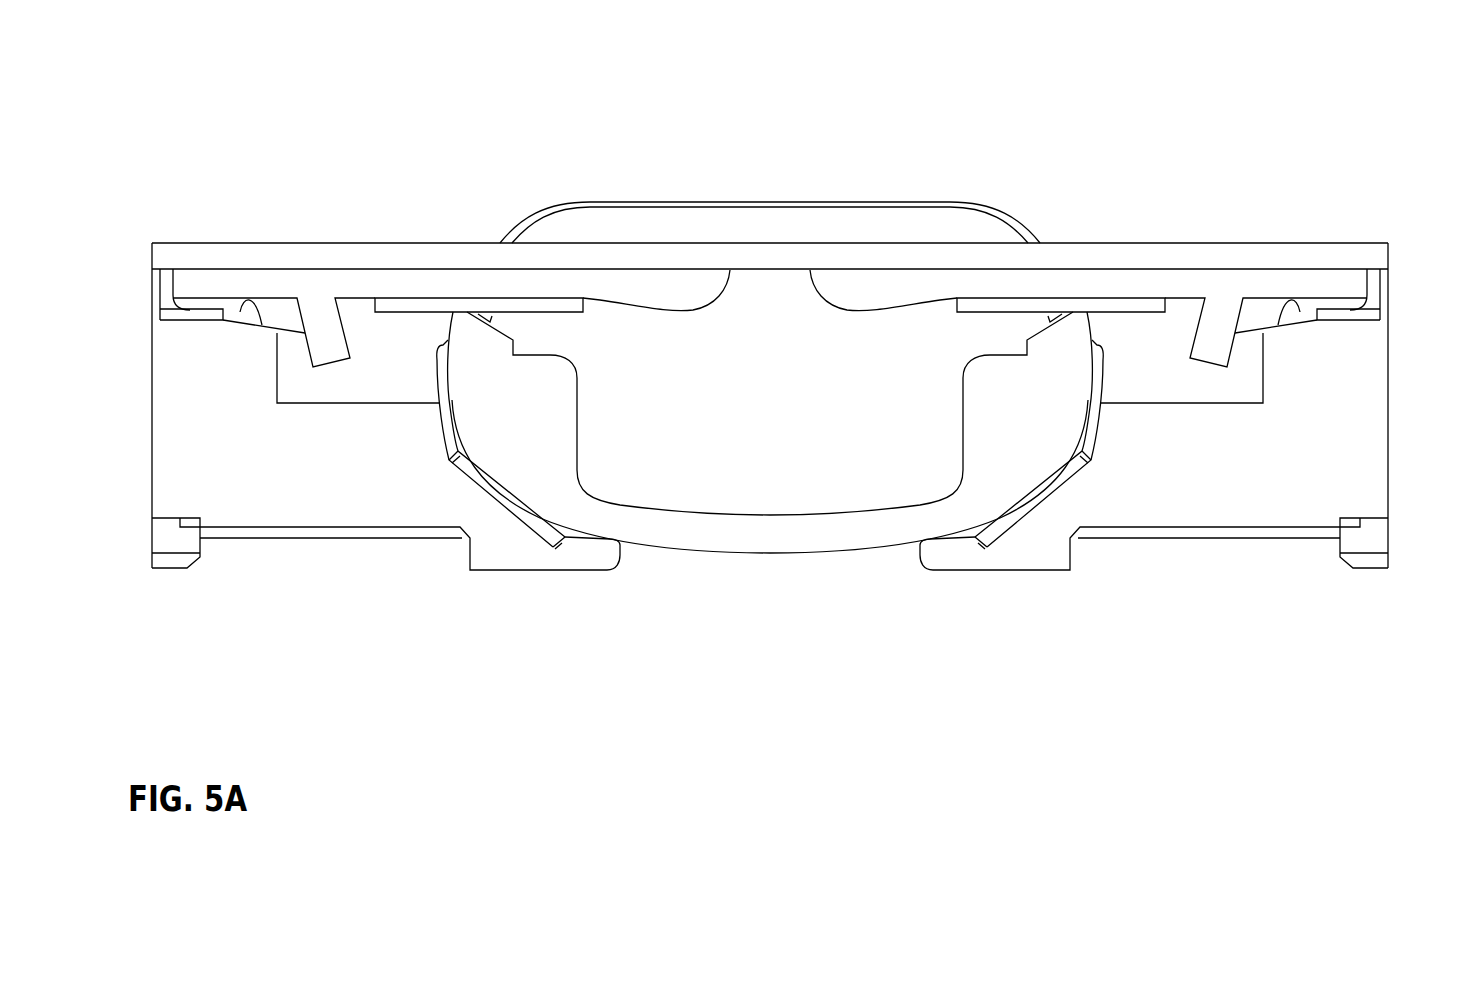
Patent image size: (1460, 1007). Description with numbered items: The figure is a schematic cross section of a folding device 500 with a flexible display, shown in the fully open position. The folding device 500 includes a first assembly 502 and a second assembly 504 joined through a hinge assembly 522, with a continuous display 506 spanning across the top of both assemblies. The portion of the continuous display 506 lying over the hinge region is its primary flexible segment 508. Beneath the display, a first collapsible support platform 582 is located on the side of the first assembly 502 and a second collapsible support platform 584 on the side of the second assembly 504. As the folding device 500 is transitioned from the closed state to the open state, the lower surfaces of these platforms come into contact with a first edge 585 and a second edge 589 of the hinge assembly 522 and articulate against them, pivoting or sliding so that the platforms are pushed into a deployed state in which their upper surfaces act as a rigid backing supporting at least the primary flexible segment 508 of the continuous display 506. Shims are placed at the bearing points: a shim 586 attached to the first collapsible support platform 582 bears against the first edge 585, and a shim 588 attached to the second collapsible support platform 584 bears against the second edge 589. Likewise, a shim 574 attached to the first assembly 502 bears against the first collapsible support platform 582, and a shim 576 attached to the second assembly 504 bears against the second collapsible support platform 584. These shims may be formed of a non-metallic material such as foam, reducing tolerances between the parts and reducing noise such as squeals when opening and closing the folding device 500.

The folding device 500 is at (1254, 129).
The first assembly 502 is at (335, 530).
The second assembly 504 is at (1193, 530).
The continuous display 506 is at (178, 258).
The primary flexible segment 508 is at (703, 228).
The hinge assembly 522 is at (745, 540).
The shim 574 is at (185, 312).
The shim 576 is at (1353, 315).
The first collapsible support platform 582 is at (287, 282).
The second collapsible support platform 584 is at (1232, 285).
The first edge 585 is at (455, 305).
The shim 586 is at (528, 298).
The shim 588 is at (1027, 307).
The second edge 589 is at (1085, 300).